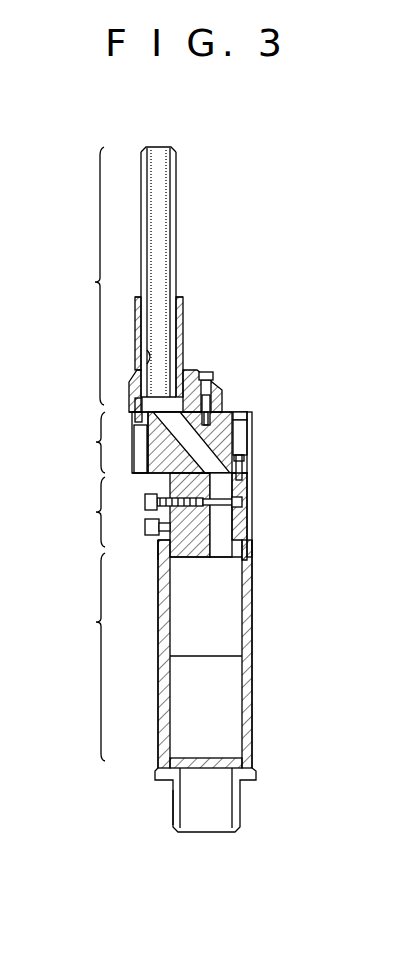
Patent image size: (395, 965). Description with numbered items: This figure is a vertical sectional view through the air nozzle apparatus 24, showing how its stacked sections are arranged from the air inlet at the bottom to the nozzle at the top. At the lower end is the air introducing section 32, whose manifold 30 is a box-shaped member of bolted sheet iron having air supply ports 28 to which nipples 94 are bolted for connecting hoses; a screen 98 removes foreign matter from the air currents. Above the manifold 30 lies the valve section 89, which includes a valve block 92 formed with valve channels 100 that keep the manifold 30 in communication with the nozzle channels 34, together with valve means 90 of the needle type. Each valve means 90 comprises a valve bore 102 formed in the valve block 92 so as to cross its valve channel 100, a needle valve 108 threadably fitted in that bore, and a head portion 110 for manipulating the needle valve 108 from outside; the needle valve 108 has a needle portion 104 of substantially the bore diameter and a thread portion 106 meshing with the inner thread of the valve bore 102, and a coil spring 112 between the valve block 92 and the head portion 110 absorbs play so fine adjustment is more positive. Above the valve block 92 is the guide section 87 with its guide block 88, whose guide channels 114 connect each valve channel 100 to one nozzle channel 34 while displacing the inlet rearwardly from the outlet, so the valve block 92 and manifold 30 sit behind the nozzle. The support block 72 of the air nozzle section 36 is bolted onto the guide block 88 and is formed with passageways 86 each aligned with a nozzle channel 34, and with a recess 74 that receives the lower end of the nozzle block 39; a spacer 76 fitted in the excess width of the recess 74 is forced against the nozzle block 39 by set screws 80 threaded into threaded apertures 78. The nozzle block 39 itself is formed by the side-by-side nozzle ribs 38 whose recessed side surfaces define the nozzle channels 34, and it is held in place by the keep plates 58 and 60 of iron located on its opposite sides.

The air nozzle apparatus 24 is at (206, 226).
The air supply ports 28 is at (234, 773).
The manifold 30 is at (252, 692).
The air introducing section 32 is at (151, 654).
The nozzle channels 34 is at (159, 164).
The air nozzle section 36 is at (76, 276).
The nozzle ribs 38 is at (177, 200).
The nozzle block 39 is at (180, 268).
The keep plate 58 is at (136, 302).
The keep plate 60 is at (184, 303).
The support block 72 is at (210, 368).
The recess 74 is at (146, 357).
The spacer 76 is at (201, 378).
The threaded apertures 78 is at (212, 395).
The set screws 80 is at (214, 372).
The passageways 86 is at (135, 409).
The guide section 87 is at (140, 442).
The guide block 88 is at (249, 415).
The valve section 89 is at (142, 511).
The valve means 90 is at (136, 534).
The valve block 92 is at (240, 540).
The nipples 94 is at (172, 806).
The screen 98 is at (196, 656).
The valve channels 100 is at (252, 518).
The valve bore 102 is at (244, 498).
The needle portion 104 is at (228, 505).
The thread portion 106 is at (196, 529).
The needle valve 108 is at (244, 478).
The head portion 110 is at (145, 502).
The coil spring 112 is at (158, 548).
The guide channels 114 is at (247, 444).